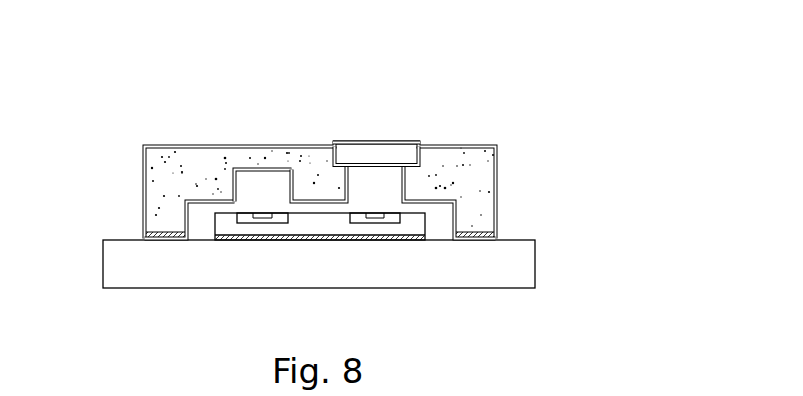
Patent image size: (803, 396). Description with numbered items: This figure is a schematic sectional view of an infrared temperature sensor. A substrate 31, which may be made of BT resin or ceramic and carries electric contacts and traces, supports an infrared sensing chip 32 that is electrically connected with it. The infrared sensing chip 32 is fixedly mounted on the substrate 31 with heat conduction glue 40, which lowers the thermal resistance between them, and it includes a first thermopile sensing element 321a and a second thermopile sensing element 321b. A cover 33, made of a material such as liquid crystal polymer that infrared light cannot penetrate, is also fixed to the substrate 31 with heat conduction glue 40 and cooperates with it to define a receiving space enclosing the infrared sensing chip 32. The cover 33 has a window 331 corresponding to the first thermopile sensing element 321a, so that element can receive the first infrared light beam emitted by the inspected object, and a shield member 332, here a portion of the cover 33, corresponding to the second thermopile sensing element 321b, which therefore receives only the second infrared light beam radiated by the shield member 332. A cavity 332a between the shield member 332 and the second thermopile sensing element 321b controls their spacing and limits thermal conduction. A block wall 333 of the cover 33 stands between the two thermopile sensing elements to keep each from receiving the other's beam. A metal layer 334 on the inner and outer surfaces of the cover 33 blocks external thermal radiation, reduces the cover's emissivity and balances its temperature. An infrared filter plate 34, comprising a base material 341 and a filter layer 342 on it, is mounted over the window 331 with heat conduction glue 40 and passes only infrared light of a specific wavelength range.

The substrate 31 is at (518, 263).
The infrared sensing chip 32 is at (386, 271).
The first thermopile sensing element 321a is at (377, 224).
The second thermopile sensing element 321b is at (266, 224).
The cover 33 is at (304, 133).
The window 331 is at (387, 177).
The shield member 332 is at (253, 193).
The cavity 332a is at (251, 190).
The block wall 333 is at (312, 186).
The metal layer 334 is at (143, 172).
The infrared filter plate 34 is at (372, 104).
The base material 341 is at (388, 181).
The filter layer 342 is at (402, 68).
The heat conduction glue 40 is at (142, 237).